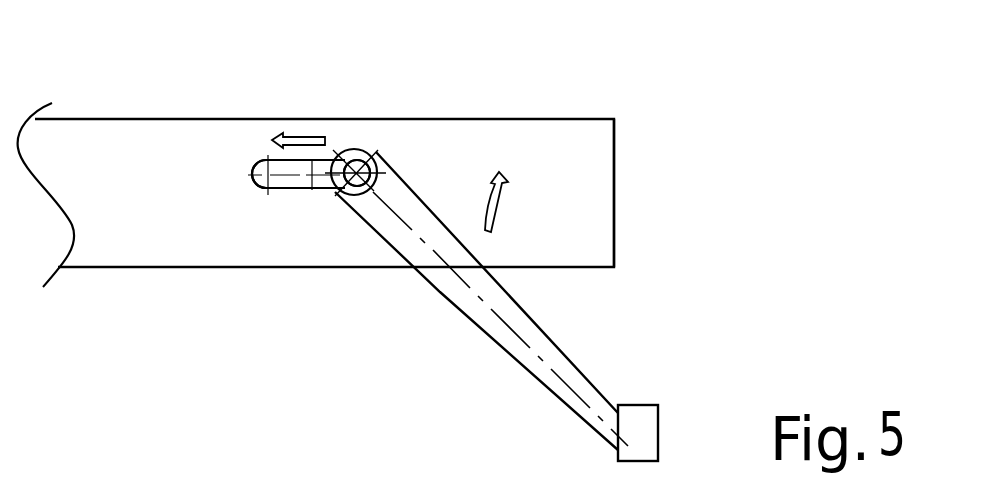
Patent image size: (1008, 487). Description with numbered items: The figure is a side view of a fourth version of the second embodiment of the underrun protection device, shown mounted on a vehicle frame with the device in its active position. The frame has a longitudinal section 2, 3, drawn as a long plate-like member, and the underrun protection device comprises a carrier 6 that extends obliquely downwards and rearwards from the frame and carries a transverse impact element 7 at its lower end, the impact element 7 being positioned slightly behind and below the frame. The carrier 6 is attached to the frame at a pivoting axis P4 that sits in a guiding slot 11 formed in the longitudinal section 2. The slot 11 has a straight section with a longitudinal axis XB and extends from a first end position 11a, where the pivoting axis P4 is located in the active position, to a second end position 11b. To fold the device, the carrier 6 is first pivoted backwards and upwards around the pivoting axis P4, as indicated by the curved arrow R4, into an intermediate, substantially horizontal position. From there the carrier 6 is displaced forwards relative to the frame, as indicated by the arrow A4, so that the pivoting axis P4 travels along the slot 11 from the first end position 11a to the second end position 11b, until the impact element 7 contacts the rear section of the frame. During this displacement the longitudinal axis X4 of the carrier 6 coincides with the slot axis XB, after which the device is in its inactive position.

The longitudinal section 2 is at (155, 208).
The longitudinal section 3 is at (632, 199).
The carrier 6 is at (492, 328).
The impact element 7 is at (650, 435).
The guiding slot 11 is at (285, 190).
The first end position 11a is at (362, 120).
The second end position 11b is at (255, 163).
The arrow A4 is at (291, 106).
The pivoting axis P4 is at (385, 163).
The arrow R4 is at (535, 217).
The longitudinal axis of the carrier X4 is at (470, 288).
The longitudinal axis of the straight section XB is at (313, 178).